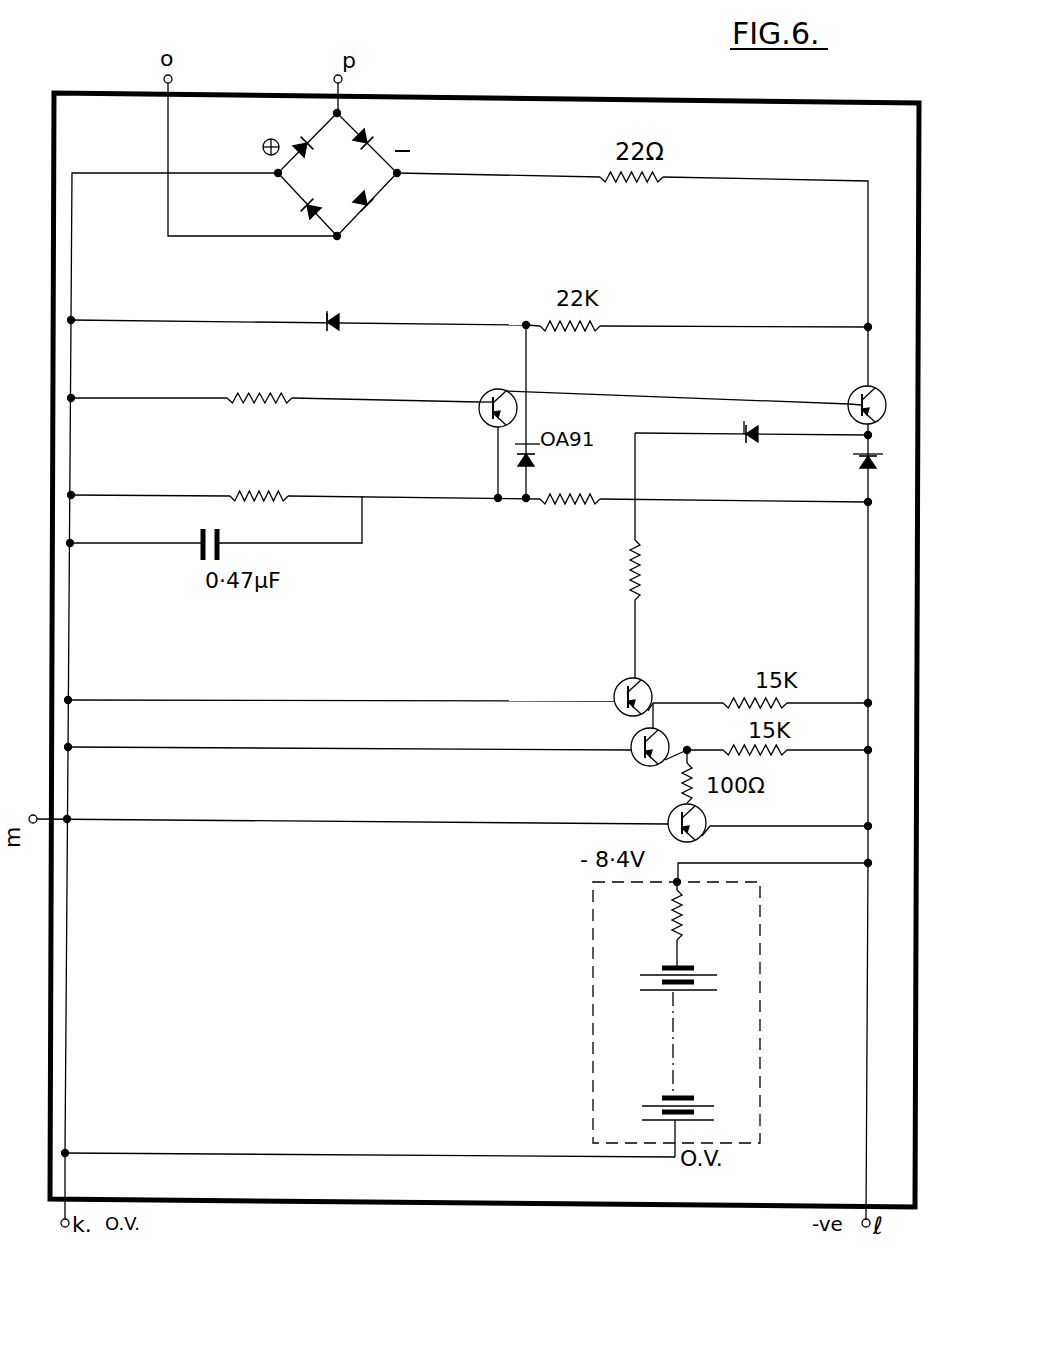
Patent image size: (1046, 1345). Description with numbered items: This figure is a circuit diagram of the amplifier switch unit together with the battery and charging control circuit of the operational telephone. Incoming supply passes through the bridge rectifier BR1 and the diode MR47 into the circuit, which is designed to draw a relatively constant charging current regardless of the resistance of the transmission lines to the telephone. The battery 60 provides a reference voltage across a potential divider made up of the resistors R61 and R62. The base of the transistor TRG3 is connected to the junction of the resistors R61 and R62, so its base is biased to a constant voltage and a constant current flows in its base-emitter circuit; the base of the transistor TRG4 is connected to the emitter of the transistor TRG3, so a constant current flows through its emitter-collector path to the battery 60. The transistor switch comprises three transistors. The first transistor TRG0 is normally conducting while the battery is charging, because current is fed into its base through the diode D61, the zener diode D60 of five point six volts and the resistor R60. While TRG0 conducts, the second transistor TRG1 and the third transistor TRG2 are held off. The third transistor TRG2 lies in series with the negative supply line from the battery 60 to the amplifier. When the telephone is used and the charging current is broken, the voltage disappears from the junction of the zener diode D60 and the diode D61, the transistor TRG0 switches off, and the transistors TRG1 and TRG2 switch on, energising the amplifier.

The battery 60 is at (592, 1012).
The bridge rectifier BR1 is at (336, 175).
The diode MR47 is at (367, 308).
The transistor TR63 TRG3 is at (517, 392).
The transistor TR64 TRG4 is at (847, 375).
The zener diode D60 is at (756, 442).
The diode D61 is at (858, 478).
The resistor R60 is at (635, 570).
The resistor R61 is at (253, 500).
The resistor R62 is at (558, 500).
The first transistor TR60 TRG0 is at (618, 688).
The second transistor TR61 TRG1 is at (642, 754).
The third transistor TR62 TRG2 is at (708, 812).